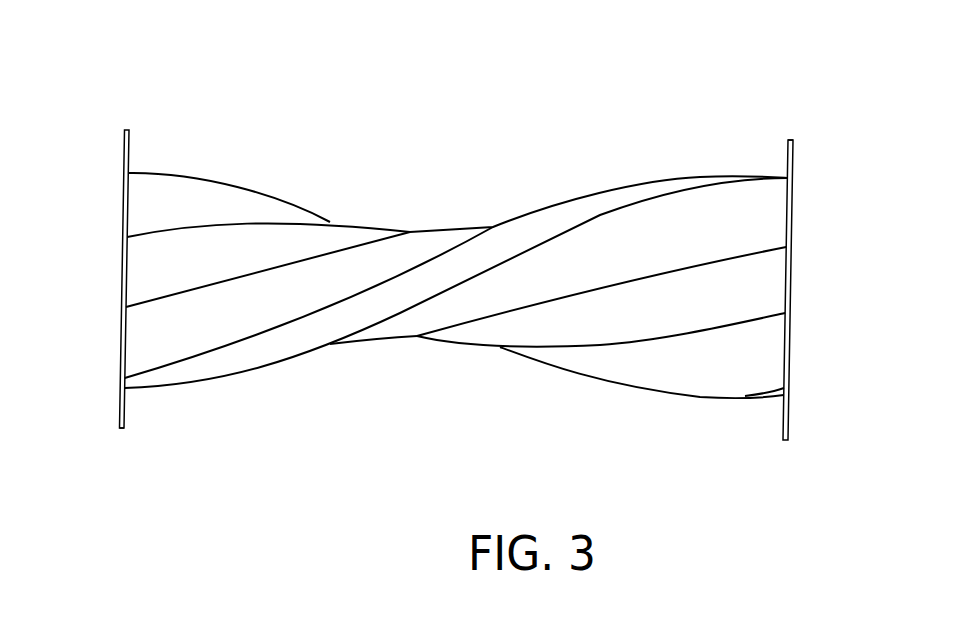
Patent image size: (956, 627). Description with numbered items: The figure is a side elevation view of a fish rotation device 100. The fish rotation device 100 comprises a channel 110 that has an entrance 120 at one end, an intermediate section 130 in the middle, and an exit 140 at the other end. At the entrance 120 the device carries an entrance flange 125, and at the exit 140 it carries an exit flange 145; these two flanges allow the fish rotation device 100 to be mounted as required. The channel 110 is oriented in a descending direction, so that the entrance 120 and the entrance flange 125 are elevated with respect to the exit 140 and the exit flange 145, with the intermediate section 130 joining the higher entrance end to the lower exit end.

The fish rotation device 100 is at (608, 146).
The channel 110 is at (180, 173).
The entrance 120 is at (116, 294).
The entrance flange 125 is at (122, 428).
The intermediate section 130 is at (372, 225).
The exit 140 is at (800, 272).
The exit flange 145 is at (793, 140).